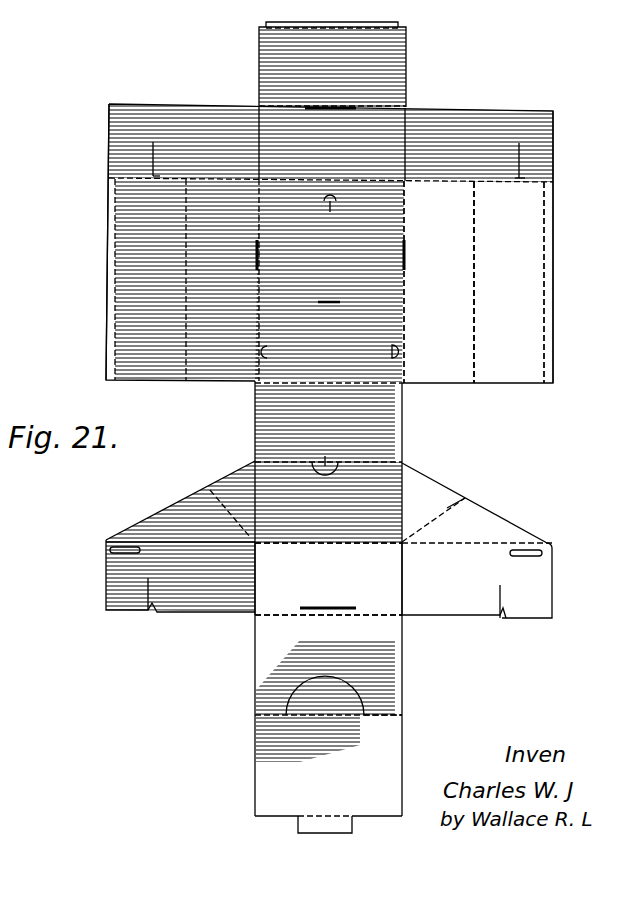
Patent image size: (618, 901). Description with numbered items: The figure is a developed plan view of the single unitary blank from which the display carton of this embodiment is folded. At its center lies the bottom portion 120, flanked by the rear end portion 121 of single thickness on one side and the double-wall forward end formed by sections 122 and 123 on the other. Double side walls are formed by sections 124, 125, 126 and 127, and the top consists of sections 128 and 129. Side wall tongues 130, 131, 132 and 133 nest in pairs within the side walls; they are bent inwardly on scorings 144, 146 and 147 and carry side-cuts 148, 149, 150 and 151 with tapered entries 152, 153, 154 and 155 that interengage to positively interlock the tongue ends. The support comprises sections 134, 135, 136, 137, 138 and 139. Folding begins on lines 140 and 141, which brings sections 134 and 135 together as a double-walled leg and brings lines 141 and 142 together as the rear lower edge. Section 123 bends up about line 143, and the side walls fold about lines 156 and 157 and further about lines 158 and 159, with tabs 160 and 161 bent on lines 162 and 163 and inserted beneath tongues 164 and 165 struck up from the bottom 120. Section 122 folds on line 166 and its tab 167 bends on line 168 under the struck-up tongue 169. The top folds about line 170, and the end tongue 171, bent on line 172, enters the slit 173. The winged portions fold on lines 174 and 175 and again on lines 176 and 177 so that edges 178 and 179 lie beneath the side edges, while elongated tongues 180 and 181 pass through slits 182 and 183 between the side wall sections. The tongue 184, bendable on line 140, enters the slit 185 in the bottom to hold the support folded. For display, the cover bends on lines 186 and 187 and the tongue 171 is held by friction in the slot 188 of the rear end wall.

The bottom portion 120 is at (329, 243).
The rear end portion 121 is at (328, 579).
The forward end wall section 122 is at (332, 67).
The forward end wall section 123 is at (332, 143).
The side wall section 124 is at (439, 282).
The side wall section 125 is at (509, 282).
The side wall section 126 is at (222, 280).
The side wall section 127 is at (150, 280).
The top section 128 is at (325, 677).
The top section 129 is at (308, 738).
The side wall tongue 130 is at (506, 580).
The side wall tongue 131 is at (180, 577).
The side wall tongue 132 is at (479, 145).
The side wall tongue 133 is at (184, 141).
The support section 134 is at (325, 422).
The support section 135 is at (328, 502).
The support section 136 is at (474, 503).
The support section 137 is at (180, 501).
The support section 138 is at (433, 514).
The support section 139 is at (230, 512).
The fold line 140 is at (367, 462).
The fold line 141 is at (354, 384).
The fold line 142 is at (355, 545).
The fold line 143 is at (368, 180).
The scoring 144 is at (404, 158).
The scoring 146 is at (262, 151).
The scoring 147 is at (257, 582).
The side-cut 148 is at (529, 156).
The side-cut 149 is at (135, 158).
The side-cut 150 is at (503, 597).
The side-cut 151 is at (148, 602).
The tapered entry 152 is at (521, 177).
The tapered entry 153 is at (163, 175).
The tapered entry 154 is at (505, 614).
The tapered entry 155 is at (160, 612).
The fold line 156 is at (406, 323).
The fold line 157 is at (256, 327).
The fold line 158 is at (476, 328).
The fold line 159 is at (185, 346).
The strip or tab 160 is at (554, 301).
The strip or tab 161 is at (107, 301).
The fold line 162 is at (553, 266).
The fold line 163 is at (115, 268).
The struck-up tongue 164 is at (400, 353).
The struck-up tongue 165 is at (260, 355).
The fold line 166 is at (288, 101).
The tab or strip 167 is at (308, 26).
The fold line 168 is at (352, 27).
The struck-up tongue 169 is at (333, 212).
The fold line 170 is at (296, 616).
The end tab or tongue 171 is at (323, 833).
The fold line 172 is at (323, 815).
The slit 173 is at (334, 107).
The fold line 174 is at (401, 498).
The fold line 175 is at (256, 488).
The fold line 176 is at (445, 500).
The fold line 177 is at (212, 490).
The edge 178 is at (452, 544).
The edge 179 is at (188, 546).
The elongated tongue 180 is at (541, 551).
The elongated tongue 181 is at (123, 545).
The slit 182 is at (406, 252).
The slit 183 is at (255, 252).
The tongue 184 is at (321, 457).
The slit 185 is at (333, 302).
The fold line 186 is at (383, 717).
The fold line 187 is at (276, 716).
The slot 188 is at (328, 596).